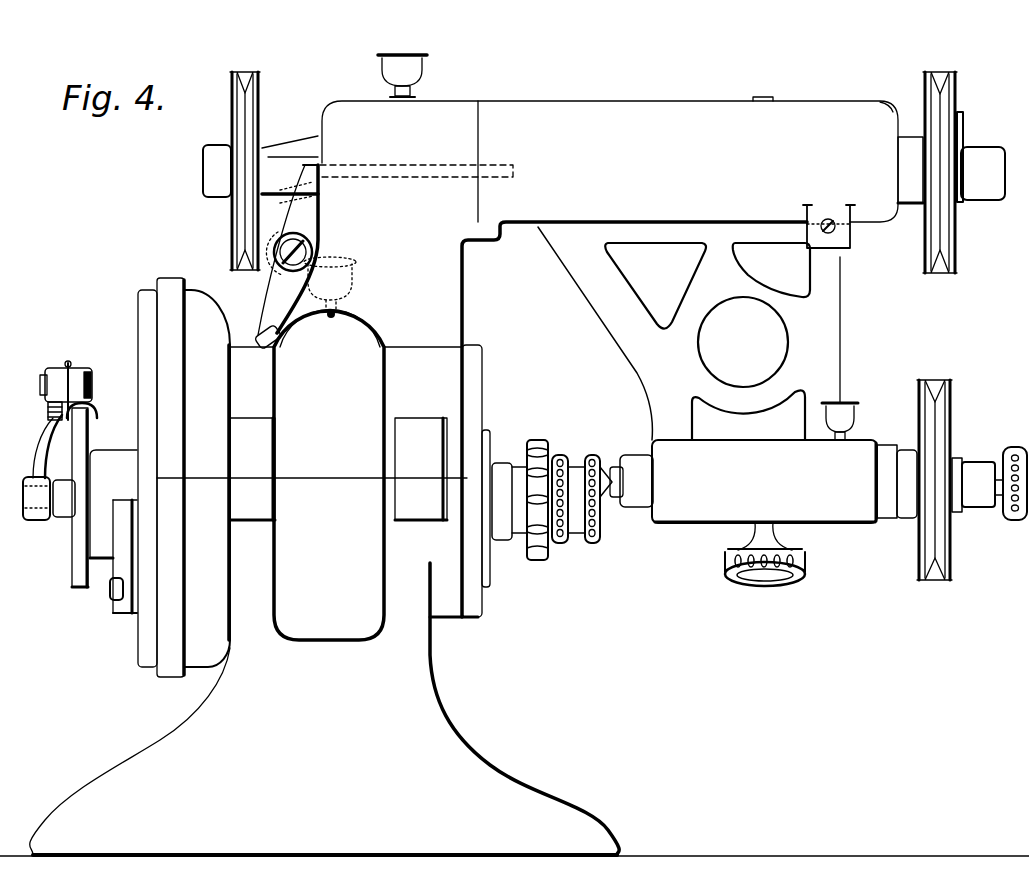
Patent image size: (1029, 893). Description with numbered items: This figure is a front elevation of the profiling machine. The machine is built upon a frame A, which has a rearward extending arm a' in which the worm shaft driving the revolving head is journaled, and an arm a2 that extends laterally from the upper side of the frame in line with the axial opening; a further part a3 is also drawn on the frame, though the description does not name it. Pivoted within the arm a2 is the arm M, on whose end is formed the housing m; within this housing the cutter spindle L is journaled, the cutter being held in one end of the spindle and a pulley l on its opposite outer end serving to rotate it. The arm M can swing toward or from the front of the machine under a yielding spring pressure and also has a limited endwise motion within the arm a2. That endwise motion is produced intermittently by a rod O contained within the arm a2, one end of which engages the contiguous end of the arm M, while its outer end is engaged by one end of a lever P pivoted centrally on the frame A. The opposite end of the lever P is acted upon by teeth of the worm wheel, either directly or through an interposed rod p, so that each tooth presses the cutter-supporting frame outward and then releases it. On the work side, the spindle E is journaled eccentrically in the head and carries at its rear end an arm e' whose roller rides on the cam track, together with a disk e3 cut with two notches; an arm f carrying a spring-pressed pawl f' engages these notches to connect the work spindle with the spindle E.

The frame A is at (325, 582).
The arm a2 is at (462, 297).
The gear on the main shaft a3 is at (540, 561).
The rearward extending arm a' is at (588, 508).
The rod O is at (322, 174).
The lever P is at (302, 219).
The rod p is at (270, 347).
The arm M is at (830, 334).
The housing m is at (705, 512).
The spindle L is at (624, 463).
The pulley l is at (972, 480).
The spindle E is at (115, 460).
The arm e' is at (104, 608).
The disk e3 is at (77, 568).
The arm f is at (38, 471).
The spring-pressed pawl f' is at (77, 419).